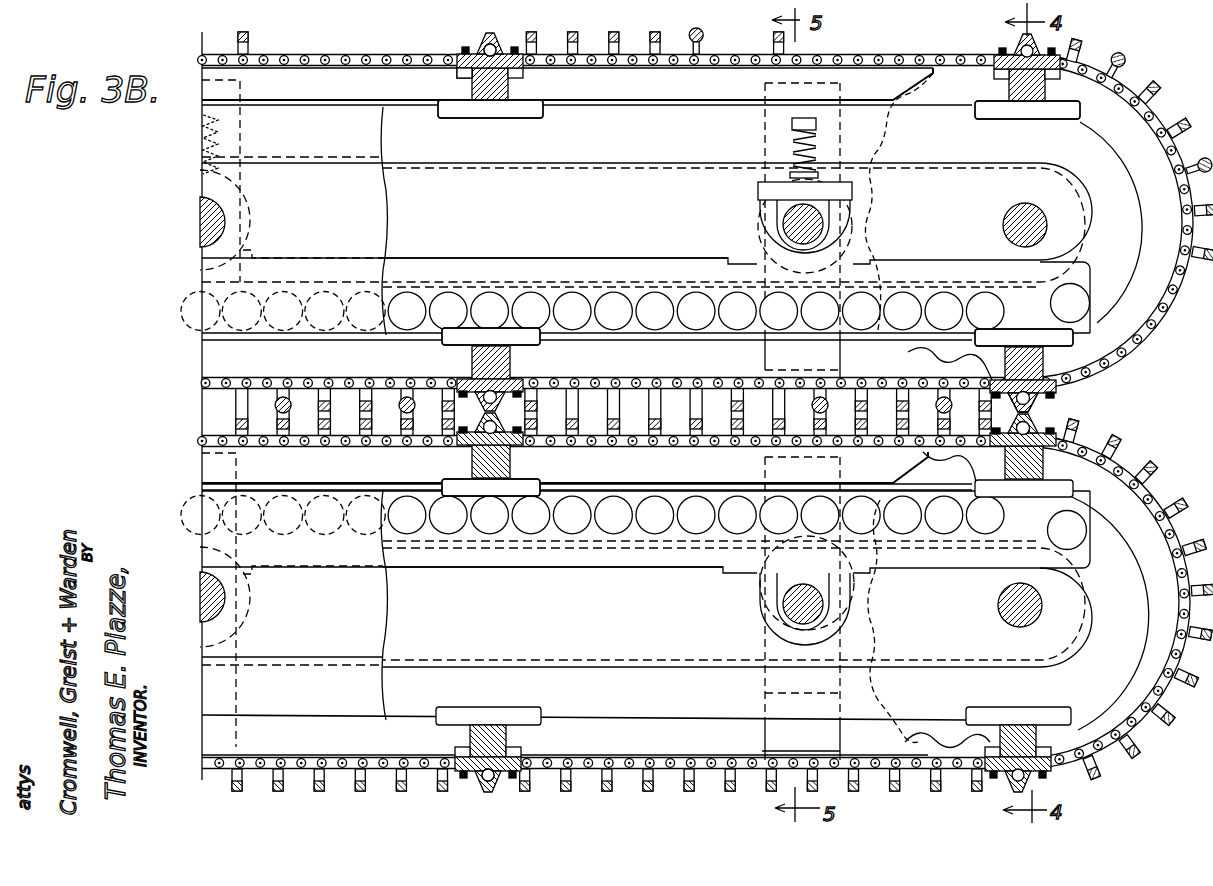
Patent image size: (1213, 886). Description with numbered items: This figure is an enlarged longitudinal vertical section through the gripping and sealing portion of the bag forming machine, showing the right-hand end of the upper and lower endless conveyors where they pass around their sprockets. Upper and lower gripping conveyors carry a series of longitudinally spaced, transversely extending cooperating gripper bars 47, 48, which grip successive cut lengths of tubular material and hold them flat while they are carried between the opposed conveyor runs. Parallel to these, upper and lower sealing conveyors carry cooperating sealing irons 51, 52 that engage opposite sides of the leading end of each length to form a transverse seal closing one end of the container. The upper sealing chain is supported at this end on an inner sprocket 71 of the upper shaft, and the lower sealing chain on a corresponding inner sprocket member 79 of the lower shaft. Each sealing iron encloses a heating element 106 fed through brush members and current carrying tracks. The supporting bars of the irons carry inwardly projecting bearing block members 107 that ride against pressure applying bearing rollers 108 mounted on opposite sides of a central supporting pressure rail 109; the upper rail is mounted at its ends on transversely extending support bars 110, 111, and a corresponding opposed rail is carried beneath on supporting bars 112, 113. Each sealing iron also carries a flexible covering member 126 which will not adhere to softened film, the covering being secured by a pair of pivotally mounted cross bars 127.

The gripper bar 47 is at (275, 405).
The gripper bar 48 is at (246, 430).
The upper sealing iron 51 is at (491, 38).
The lower sealing iron 52 is at (526, 452).
The inner sprocket 71 is at (923, 356).
The inner sprocket member 79 is at (932, 738).
The heating element 106 is at (461, 75).
The bearing block member 107 is at (494, 328).
The pressure applying bearing roller 108 is at (470, 300).
The supporting pressure rail 109 is at (565, 265).
The support bar 110 is at (224, 218).
The support bar 111 is at (800, 220).
The supporting bar 112 is at (224, 605).
The supporting bar 113 is at (795, 612).
The covering member 126 is at (1036, 407).
The cross bar 127 is at (481, 48).